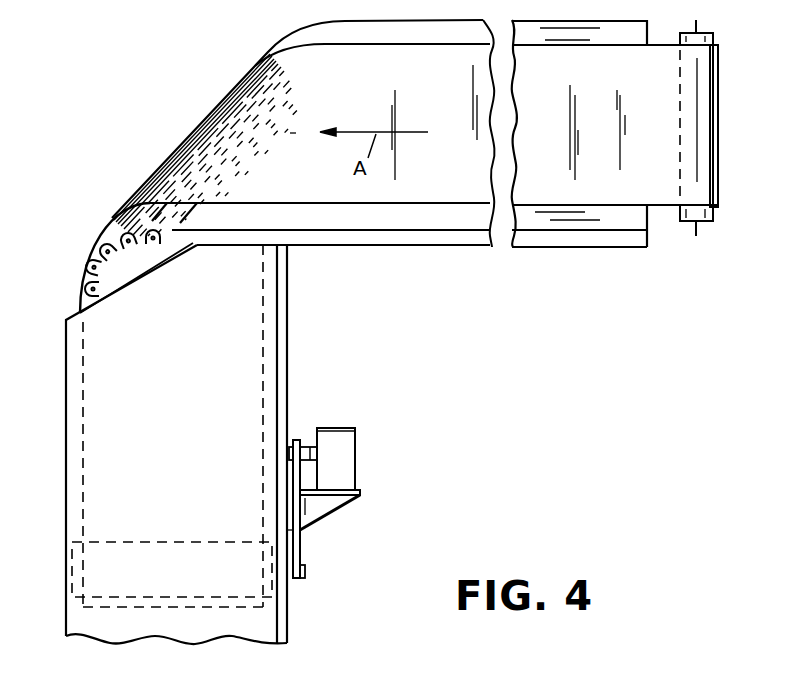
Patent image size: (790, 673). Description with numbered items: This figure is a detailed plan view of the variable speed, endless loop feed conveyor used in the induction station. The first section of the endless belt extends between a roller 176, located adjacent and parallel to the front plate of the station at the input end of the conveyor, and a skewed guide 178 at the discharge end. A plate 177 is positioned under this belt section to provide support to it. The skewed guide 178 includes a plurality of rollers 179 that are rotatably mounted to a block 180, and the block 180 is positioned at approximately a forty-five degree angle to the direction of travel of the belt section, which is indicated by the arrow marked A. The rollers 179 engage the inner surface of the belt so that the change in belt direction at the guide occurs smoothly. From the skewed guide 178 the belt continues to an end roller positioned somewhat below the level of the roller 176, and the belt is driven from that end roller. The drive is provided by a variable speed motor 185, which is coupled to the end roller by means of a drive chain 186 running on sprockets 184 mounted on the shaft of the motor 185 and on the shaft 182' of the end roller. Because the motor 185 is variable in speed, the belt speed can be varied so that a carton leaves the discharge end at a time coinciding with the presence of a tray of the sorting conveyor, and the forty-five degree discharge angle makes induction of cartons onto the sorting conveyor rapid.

The roller 176 is at (706, 33).
The plate 177 is at (441, 240).
The skewed guide 178 is at (98, 230).
The rollers 179 is at (110, 254).
The block 180 is at (120, 277).
The shaft of roller 182' is at (315, 534).
The sprockets 184 is at (298, 442).
The variable speed motor 185 is at (310, 446).
The drive chain 186 is at (302, 550).